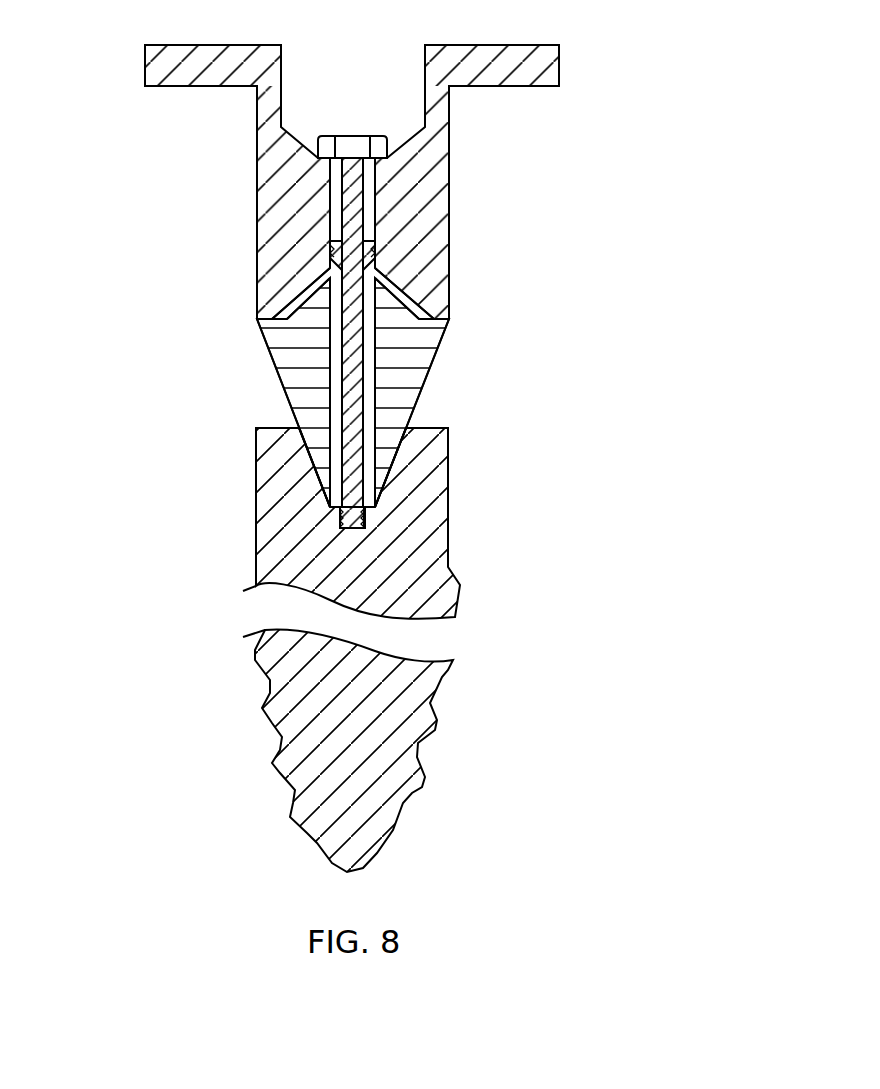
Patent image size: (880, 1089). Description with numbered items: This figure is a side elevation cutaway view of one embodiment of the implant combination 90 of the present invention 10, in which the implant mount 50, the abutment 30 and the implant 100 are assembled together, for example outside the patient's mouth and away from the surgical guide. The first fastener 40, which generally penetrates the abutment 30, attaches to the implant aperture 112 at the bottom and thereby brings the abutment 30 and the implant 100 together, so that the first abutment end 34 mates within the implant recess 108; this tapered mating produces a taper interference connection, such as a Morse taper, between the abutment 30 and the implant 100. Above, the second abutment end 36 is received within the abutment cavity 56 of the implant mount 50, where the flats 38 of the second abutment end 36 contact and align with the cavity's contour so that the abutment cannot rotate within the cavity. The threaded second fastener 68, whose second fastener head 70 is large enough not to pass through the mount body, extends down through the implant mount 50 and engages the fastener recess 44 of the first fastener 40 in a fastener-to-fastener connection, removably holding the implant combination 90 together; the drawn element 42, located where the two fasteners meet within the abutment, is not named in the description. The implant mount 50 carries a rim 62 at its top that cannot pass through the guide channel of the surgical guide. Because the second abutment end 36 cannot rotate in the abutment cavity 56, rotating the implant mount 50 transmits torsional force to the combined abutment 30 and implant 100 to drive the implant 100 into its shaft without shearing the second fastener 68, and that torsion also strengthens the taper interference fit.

The present invention 10 is at (632, 120).
The abutment 30 is at (410, 378).
The first abutment end 34 is at (307, 445).
The second abutment end 36 is at (300, 297).
The flats 38 is at (412, 303).
The first fastener 40 is at (375, 493).
The conical nut 42 is at (373, 248).
The fastener recess 44 is at (340, 372).
The implant mount 50 is at (440, 193).
The abutment cavity 56 is at (337, 277).
The rim 62 is at (145, 68).
The second fastener 68 is at (333, 198).
The second fastener head 70 is at (350, 143).
The implant combination 90 is at (650, 238).
The implant 100 is at (460, 588).
The implant recess 108 is at (323, 488).
The implant aperture 112 is at (362, 525).